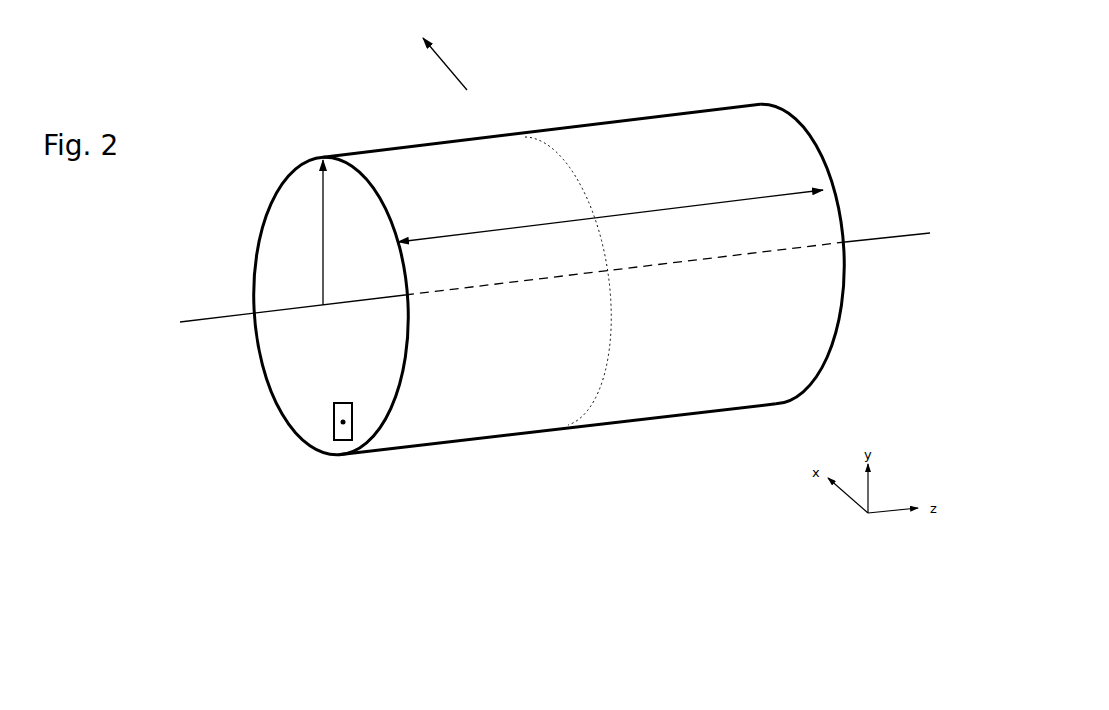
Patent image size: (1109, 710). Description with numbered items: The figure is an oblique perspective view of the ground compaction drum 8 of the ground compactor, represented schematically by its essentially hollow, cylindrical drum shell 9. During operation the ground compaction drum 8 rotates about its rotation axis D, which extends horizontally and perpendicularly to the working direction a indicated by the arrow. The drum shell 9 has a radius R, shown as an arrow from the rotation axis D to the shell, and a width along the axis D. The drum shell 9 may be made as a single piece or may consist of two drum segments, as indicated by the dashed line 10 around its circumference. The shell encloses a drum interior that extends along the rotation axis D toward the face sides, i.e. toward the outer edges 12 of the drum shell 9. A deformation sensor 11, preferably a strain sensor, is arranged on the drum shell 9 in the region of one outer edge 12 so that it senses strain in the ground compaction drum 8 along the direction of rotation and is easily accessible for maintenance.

The ground compaction drum 8 is at (603, 86).
The drum shell 9 is at (477, 410).
The dashed line 10 is at (610, 345).
The deformation sensor 11 is at (343, 422).
The outer edge 12 is at (275, 397).
The rotation axis D is at (559, 266).
The radius R is at (323, 237).
The working direction a is at (435, 49).